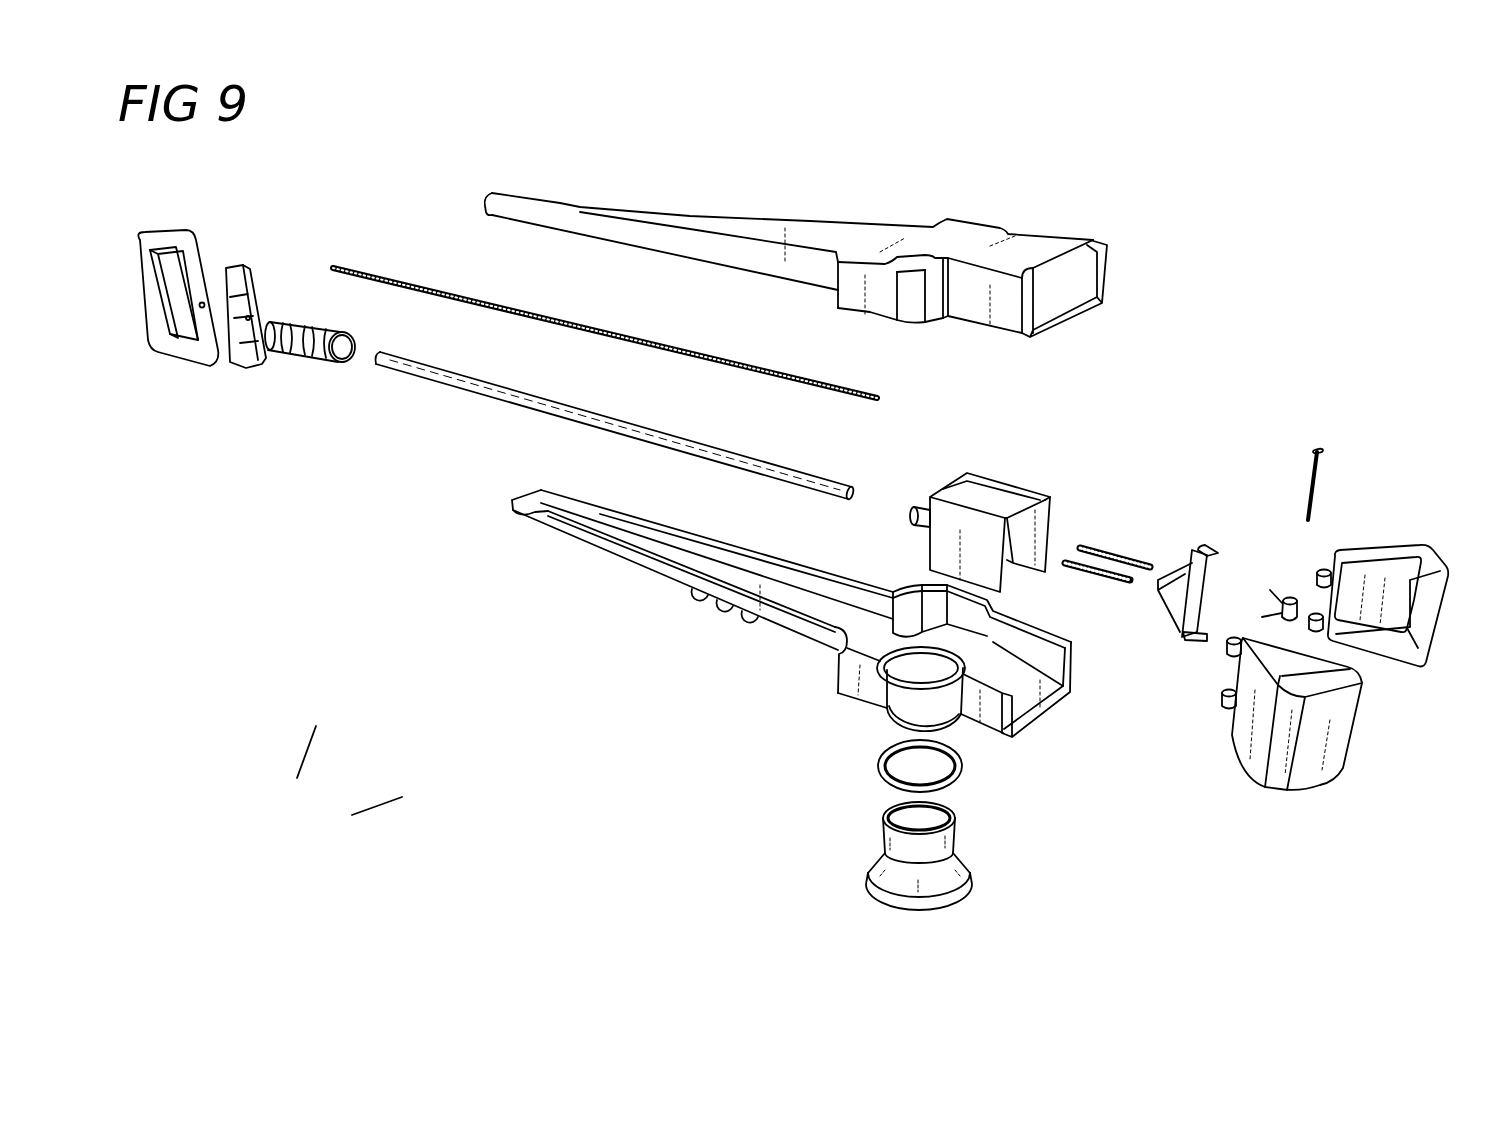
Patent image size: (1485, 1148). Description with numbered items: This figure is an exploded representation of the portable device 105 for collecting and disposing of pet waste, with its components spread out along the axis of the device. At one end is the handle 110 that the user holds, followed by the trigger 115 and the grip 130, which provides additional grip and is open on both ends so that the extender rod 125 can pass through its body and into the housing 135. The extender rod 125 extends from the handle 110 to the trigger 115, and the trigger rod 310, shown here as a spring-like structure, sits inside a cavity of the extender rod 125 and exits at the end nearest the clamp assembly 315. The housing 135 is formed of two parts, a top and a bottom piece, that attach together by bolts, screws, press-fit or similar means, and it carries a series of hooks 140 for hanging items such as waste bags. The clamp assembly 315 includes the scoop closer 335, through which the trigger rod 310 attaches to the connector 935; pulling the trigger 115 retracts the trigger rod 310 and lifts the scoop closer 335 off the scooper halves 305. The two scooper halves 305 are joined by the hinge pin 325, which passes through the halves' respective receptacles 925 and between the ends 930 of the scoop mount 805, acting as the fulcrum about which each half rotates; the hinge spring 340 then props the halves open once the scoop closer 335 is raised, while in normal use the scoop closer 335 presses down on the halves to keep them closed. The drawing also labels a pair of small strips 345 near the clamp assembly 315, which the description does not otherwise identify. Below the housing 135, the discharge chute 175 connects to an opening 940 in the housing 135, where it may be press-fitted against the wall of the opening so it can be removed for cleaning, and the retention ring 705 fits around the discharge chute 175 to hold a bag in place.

The portable device 105 is at (326, 836).
The handle 110 is at (172, 232).
The trigger 115 is at (234, 266).
The extender rod 125 is at (416, 382).
The grip 130 is at (320, 366).
The housing 135 is at (688, 213).
The hooks 140 is at (698, 604).
The discharge chute 175 is at (874, 866).
The scooper halves 305 is at (1420, 672).
The trigger rod 310 is at (371, 266).
The clamp assembly 315 is at (1256, 621).
The hinge pin 325 is at (1318, 446).
The scoop closer 335 is at (1010, 480).
The hinge spring 340 is at (1288, 596).
The grip strips 345 is at (1108, 565).
The retention ring 705 is at (878, 766).
The scoop mount 805 is at (1186, 560).
The receptacles 925 is at (1330, 570).
The ends 930 is at (1212, 546).
The connector 935 is at (910, 500).
The opening 940 is at (950, 715).